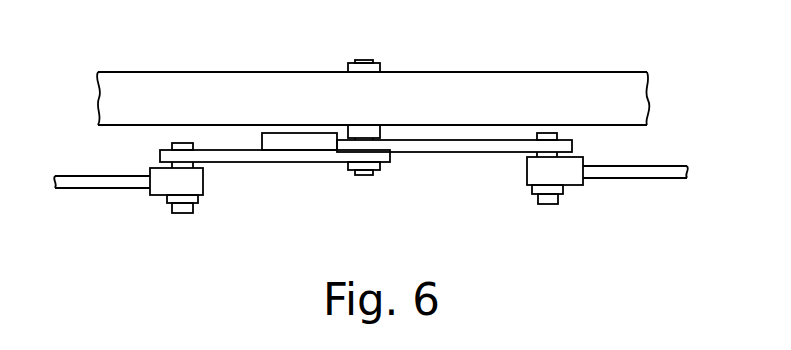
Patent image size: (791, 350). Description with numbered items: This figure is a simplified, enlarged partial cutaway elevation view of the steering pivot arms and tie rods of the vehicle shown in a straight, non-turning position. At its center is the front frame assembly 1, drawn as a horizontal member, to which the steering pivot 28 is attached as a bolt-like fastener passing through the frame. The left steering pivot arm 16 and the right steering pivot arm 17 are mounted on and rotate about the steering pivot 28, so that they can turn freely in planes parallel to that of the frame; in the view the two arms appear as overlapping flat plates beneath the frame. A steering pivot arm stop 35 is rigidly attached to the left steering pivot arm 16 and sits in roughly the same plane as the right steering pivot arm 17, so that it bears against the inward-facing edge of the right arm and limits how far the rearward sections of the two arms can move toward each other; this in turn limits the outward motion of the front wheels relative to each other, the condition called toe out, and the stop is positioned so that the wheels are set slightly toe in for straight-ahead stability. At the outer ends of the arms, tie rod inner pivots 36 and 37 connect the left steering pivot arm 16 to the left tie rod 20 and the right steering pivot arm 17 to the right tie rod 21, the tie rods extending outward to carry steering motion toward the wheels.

The front frame assembly 1 is at (218, 107).
The steering pivot 28 is at (355, 62).
The steering pivot arm stop 35 is at (295, 143).
The left steering pivot arm 16 is at (253, 157).
The right steering pivot arm 17 is at (447, 150).
The tie rod inner pivot 36 is at (180, 214).
The tie rod inner pivot 37 is at (550, 204).
The left tie rod 20 is at (85, 182).
The right tie rod 21 is at (630, 172).